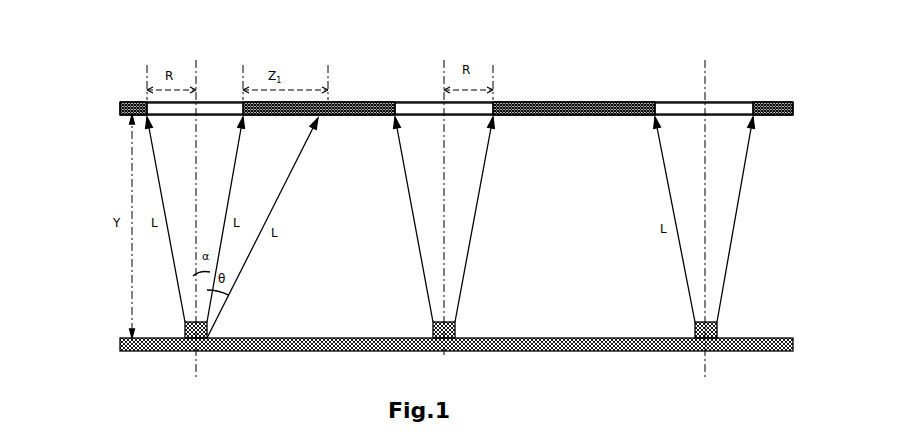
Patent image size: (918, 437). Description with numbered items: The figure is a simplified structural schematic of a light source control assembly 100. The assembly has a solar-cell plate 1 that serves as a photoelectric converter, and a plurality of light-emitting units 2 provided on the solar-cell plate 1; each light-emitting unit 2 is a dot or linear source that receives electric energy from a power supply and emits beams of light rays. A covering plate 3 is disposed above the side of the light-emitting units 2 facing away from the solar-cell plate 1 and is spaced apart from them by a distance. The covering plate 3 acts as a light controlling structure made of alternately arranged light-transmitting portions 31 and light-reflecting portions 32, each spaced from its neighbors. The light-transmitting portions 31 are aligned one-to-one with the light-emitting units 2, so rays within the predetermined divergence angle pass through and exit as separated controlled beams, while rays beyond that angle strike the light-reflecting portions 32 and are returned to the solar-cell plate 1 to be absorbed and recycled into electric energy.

The light source control assembly 100 is at (35, 14).
The solar-cell plate 1 is at (793, 338).
The light-emitting unit 2 is at (717, 325).
The covering plate 3 is at (475, 76).
The light-transmitting portions 31 is at (648, 38).
The light-reflecting portions 32 is at (551, 52).